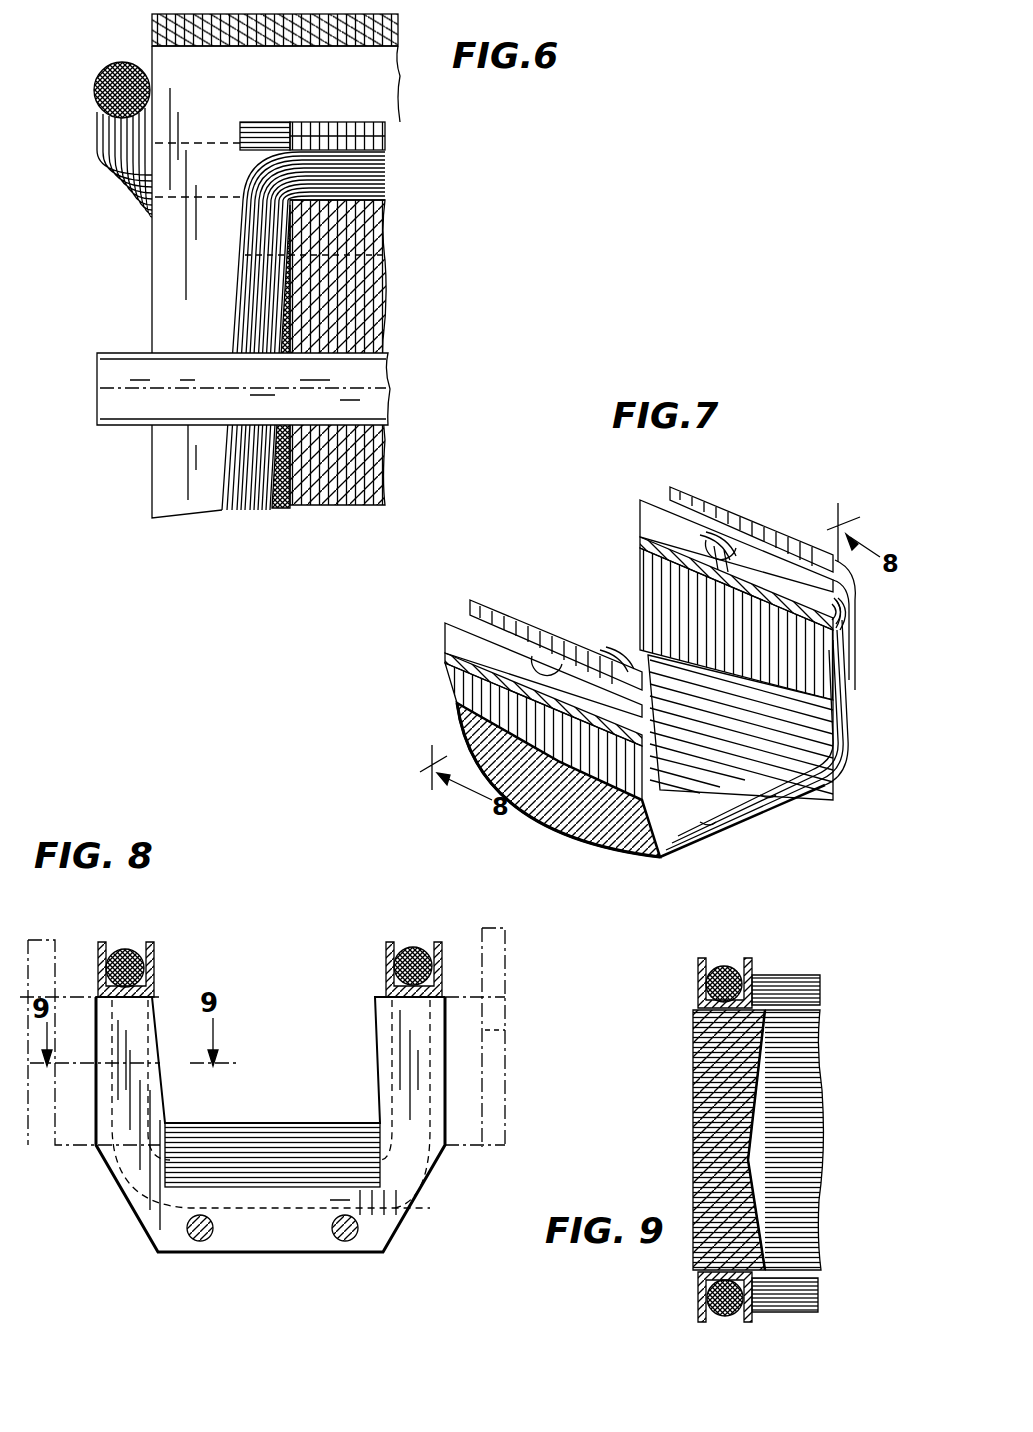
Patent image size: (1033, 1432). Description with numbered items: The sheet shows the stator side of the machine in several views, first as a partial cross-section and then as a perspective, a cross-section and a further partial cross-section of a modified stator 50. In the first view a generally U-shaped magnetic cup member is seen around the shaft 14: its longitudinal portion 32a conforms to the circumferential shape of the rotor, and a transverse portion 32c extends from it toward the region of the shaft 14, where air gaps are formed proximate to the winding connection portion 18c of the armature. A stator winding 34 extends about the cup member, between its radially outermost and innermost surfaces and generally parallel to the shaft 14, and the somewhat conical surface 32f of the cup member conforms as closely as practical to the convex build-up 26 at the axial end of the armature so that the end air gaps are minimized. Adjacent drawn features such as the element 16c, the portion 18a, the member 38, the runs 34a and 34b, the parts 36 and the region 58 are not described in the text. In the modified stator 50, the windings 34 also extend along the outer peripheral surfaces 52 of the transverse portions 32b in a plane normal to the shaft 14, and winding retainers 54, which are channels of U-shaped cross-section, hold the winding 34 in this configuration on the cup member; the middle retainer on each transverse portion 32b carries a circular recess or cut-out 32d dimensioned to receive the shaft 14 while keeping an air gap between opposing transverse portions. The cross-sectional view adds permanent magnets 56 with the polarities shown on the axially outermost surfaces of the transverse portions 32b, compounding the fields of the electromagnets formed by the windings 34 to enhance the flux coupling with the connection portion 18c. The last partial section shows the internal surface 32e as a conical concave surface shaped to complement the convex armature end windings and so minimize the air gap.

In FIG. 6, the shaft 14 is at (102, 396).
In FIG. 6, the hub core block 16c is at (386, 205).
In FIG. 6, the winding band 18a is at (386, 168).
In FIG. 6, the winding connection portion 18c is at (262, 512).
In FIG. 6, the build-up 26 is at (236, 462).
In FIG. 6, the longitudinal portion 32a is at (383, 90).
In FIG. 7, the transverse portion 32b is at (470, 698).
In FIG. 8, the transverse portion 32b is at (269, 1124).
In FIG. 6, the transverse portion 32c is at (157, 282).
In FIG. 7, the circular recess 32d is at (556, 610).
In FIG. 9, the internal conical surface 32e is at (695, 1133).
In FIG. 6, the conical surface 32f is at (224, 513).
In FIG. 6, the stator winding 34 is at (112, 172).
In FIG. 7, the stator winding 34 is at (806, 758).
In FIG. 9, the stator winding 34 is at (728, 966).
In FIG. 7, the cord run 34a is at (618, 622).
In FIG. 9, the cord run 34a is at (732, 1318).
In FIG. 7, the cord run 34b is at (778, 570).
In FIG. 8, the cord run 34b is at (126, 950).
In FIG. 7, the rod 36 is at (704, 822).
In FIG. 8, the rod 36 is at (200, 1242).
In FIG. 6, the top plate 38 is at (152, 22).
In FIG. 7, the stator 50 is at (536, 548).
In FIG. 7, the outer peripheral surface 52 is at (457, 660).
In FIG. 7, the winding retainer 54 is at (696, 502).
In FIG. 8, the winding retainer 54 is at (156, 948).
In FIG. 9, the winding retainer 54 is at (698, 970).
In FIG. 8, the permanent magnet 56 is at (54, 1128).
In FIG. 8, the section region 58 is at (506, 1030).